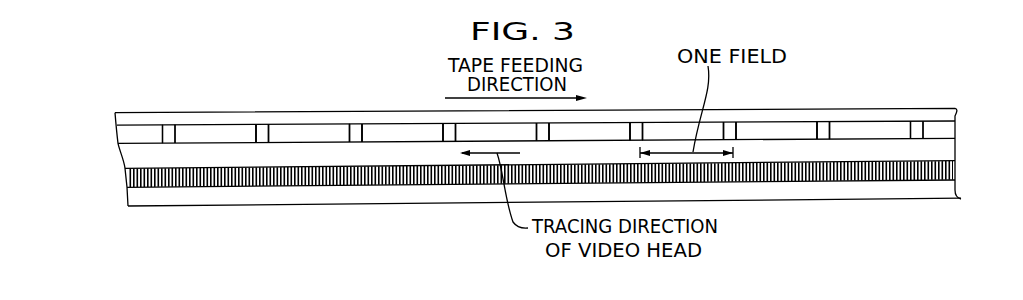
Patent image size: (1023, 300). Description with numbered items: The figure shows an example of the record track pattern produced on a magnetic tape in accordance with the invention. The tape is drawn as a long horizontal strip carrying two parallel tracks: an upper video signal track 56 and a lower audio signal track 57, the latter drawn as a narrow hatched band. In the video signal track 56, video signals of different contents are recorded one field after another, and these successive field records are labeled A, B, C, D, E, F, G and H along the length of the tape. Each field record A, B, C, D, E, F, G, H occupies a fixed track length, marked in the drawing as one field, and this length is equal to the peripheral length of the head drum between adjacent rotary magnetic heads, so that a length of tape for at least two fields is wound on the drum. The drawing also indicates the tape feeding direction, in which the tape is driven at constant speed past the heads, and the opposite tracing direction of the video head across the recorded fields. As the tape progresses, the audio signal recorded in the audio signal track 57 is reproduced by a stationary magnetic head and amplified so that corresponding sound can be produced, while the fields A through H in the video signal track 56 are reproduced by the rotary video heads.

The video signal track 56 is at (123, 134).
The audio signal track 57 is at (127, 177).
The field record A is at (858, 127).
The field record B is at (772, 130).
The field record C is at (677, 130).
The field record D is at (594, 128).
The field record E is at (476, 133).
The field record F is at (388, 133).
The field record G is at (310, 133).
The field record H is at (210, 133).